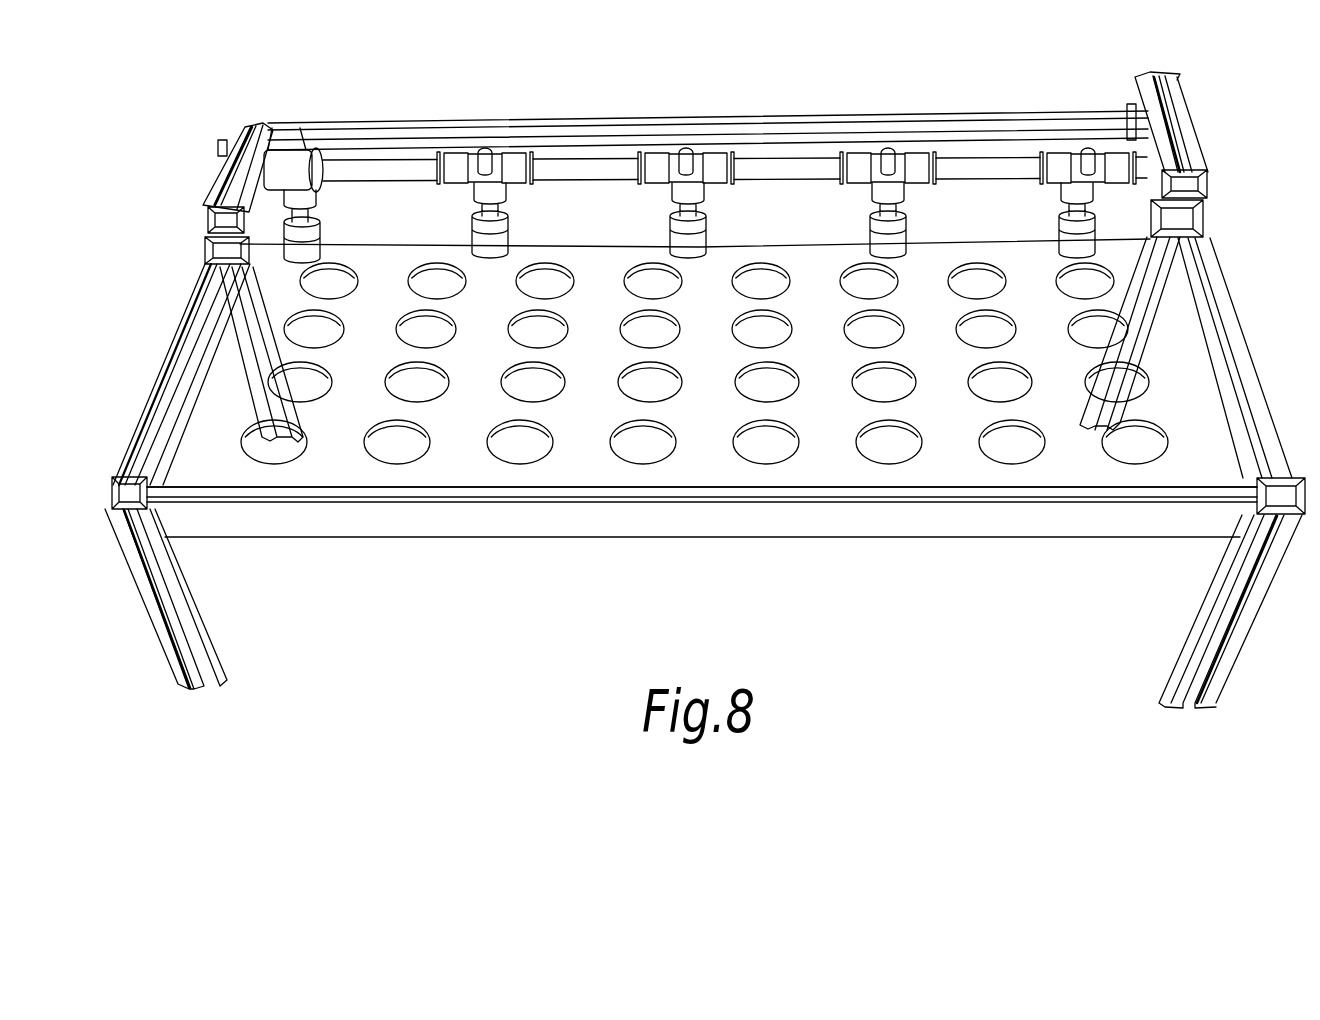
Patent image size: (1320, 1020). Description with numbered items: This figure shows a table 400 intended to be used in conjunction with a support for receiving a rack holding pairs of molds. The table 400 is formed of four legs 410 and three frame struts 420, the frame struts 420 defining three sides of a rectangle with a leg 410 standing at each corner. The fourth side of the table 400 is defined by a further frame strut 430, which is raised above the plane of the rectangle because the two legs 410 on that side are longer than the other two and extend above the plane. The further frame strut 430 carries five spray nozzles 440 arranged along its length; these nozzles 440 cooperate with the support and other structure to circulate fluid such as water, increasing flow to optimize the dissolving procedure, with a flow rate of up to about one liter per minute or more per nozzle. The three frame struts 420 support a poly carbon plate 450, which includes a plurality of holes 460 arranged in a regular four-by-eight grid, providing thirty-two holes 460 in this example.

The table 400 is at (998, 107).
The leg 410 is at (152, 607).
The frame strut 420 is at (1222, 298).
The further frame strut 430 is at (411, 135).
The spray nozzle 440 is at (686, 152).
The poly carbon plate 450 is at (580, 460).
The hole 460 is at (1010, 447).